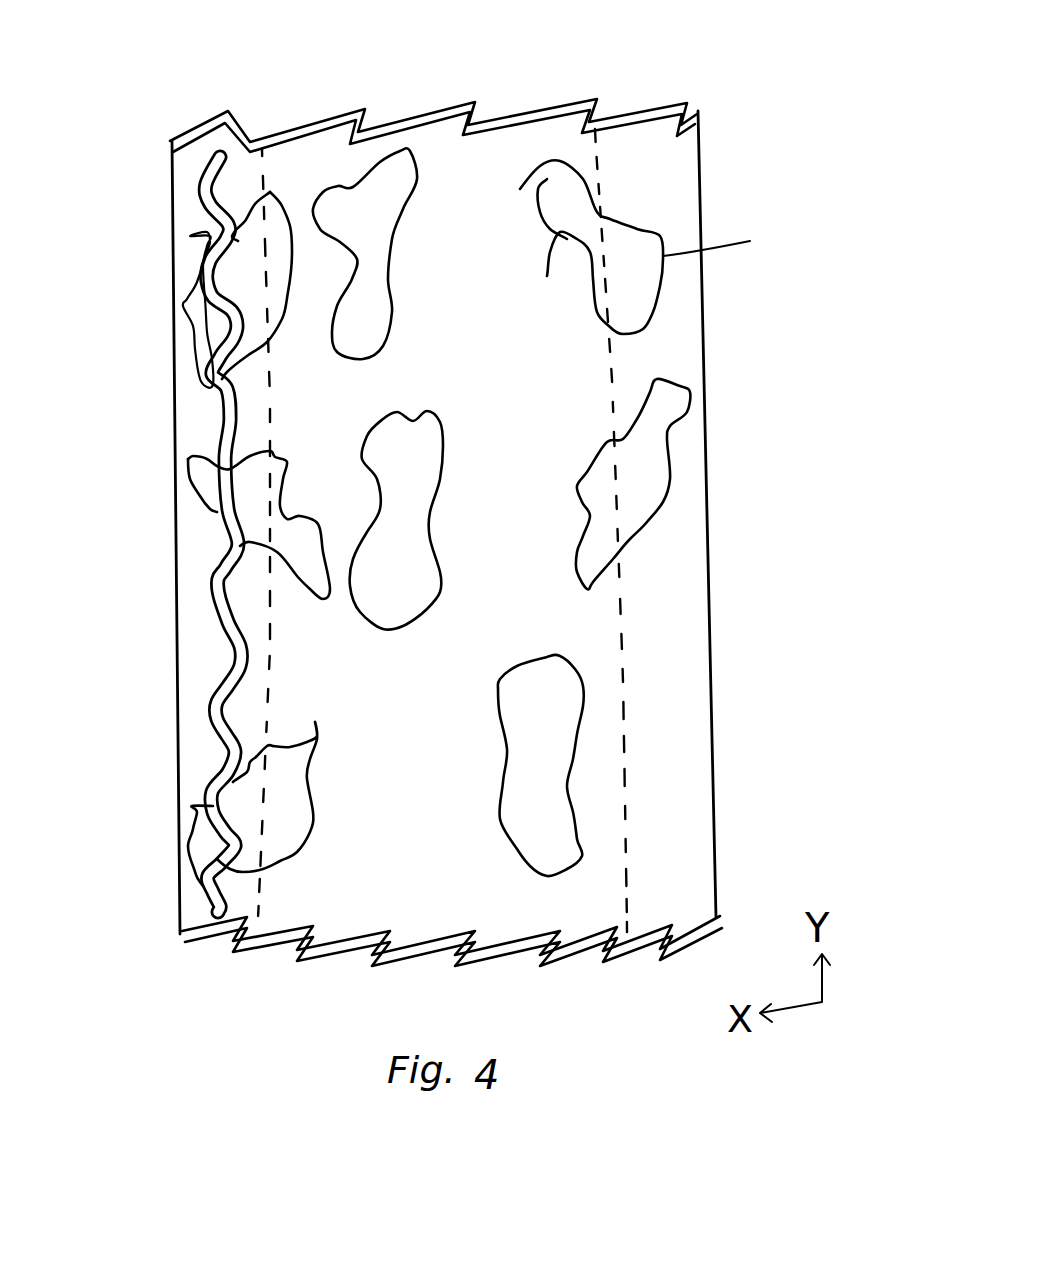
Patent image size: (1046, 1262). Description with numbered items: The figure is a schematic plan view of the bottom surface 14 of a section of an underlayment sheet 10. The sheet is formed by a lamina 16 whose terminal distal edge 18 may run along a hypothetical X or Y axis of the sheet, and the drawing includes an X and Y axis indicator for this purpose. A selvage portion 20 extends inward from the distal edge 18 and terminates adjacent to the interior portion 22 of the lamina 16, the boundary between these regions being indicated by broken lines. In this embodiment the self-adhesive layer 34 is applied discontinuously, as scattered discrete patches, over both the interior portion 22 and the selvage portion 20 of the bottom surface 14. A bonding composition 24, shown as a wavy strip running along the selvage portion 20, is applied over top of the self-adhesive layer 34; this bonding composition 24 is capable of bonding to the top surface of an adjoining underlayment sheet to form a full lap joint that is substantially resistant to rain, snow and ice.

The underlayment sheet 10 is at (723, 73).
The bottom surface 14 is at (733, 234).
The lamina 16 is at (173, 267).
The terminal distal edge 18 is at (173, 493).
The selvage portion 20 is at (178, 745).
The interior portion 22 is at (363, 823).
The bonding composition 24 is at (225, 400).
The self-adhesive layer 34 is at (283, 212).